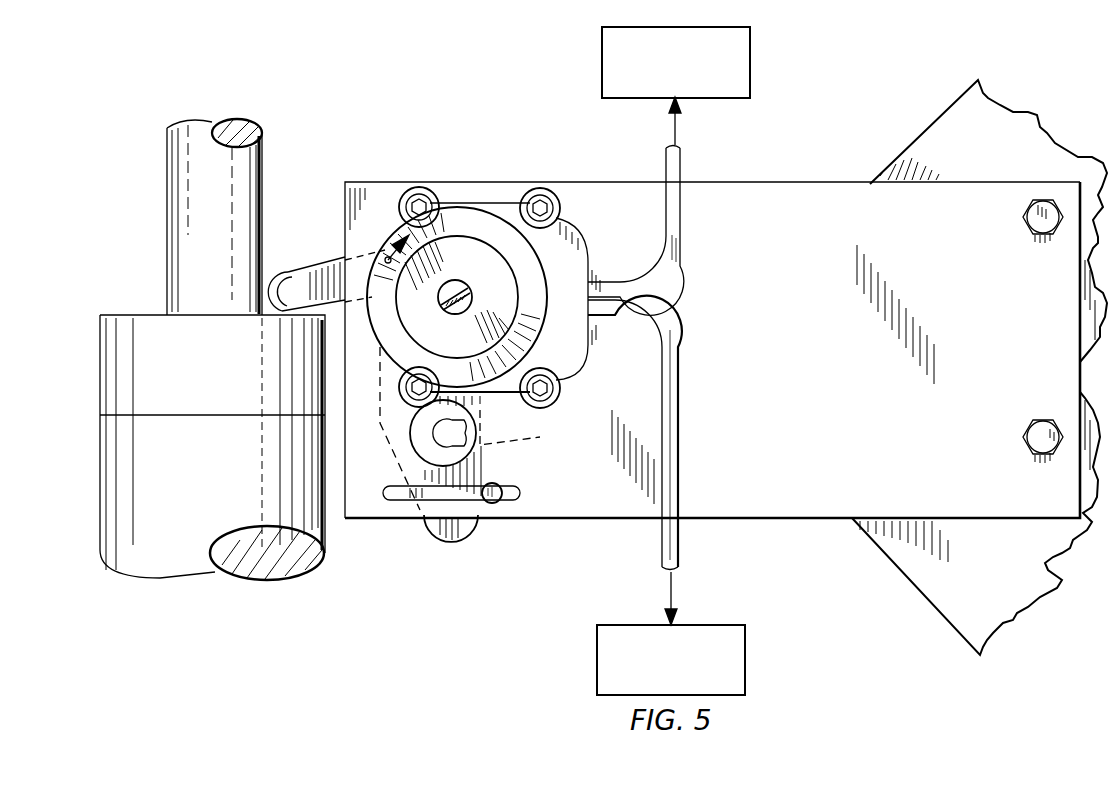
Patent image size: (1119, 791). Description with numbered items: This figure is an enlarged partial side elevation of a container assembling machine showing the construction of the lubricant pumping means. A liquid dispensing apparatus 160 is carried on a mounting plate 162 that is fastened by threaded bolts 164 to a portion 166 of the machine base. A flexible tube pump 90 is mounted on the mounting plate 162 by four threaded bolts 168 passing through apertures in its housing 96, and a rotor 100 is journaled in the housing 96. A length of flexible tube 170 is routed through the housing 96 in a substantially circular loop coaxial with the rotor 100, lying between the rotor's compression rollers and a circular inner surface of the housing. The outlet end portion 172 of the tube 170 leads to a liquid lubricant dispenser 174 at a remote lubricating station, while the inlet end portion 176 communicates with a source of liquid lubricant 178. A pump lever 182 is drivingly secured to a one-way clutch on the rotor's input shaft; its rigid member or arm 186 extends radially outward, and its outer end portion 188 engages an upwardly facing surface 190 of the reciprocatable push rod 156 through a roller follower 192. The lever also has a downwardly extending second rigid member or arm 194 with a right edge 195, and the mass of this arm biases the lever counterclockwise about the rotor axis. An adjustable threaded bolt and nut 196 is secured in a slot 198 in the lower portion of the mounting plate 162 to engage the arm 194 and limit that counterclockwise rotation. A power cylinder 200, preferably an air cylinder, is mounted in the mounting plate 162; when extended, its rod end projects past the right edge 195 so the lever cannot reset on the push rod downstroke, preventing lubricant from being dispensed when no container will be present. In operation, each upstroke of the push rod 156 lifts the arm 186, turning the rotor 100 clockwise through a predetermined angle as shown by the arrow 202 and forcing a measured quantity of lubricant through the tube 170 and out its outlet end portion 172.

The flexible tube pump 90 is at (505, 212).
The housing 96 is at (497, 212).
The rotor 100 is at (456, 283).
The push rod 156 is at (118, 492).
The liquid dispensing apparatus 160 is at (542, 358).
The mounting plate 162 is at (760, 190).
The threaded bolts 164 is at (1043, 238).
The portion of the base 166 is at (990, 97).
The threaded bolts 168 is at (421, 200).
The flexible tube 170 is at (668, 206).
The outlet end portion 172 is at (682, 155).
The liquid lubricant dispenser 174 is at (752, 60).
The inlet end portion 176 is at (660, 552).
The source of liquid lubricant 178 is at (747, 647).
The pump lever 182 is at (295, 252).
The rigid member or arm 186 is at (330, 268).
The outer end portion 188 is at (285, 303).
The upwardly facing surface 190 is at (122, 316).
The roller follower 192 is at (288, 278).
The second rigid member or arm 194 is at (437, 536).
The right edge 195 is at (550, 420).
The adjustable threaded bolt and nut 196 is at (497, 484).
The slot 198 is at (398, 500).
The power cylinder 200 is at (412, 442).
The arrow 202 is at (386, 257).